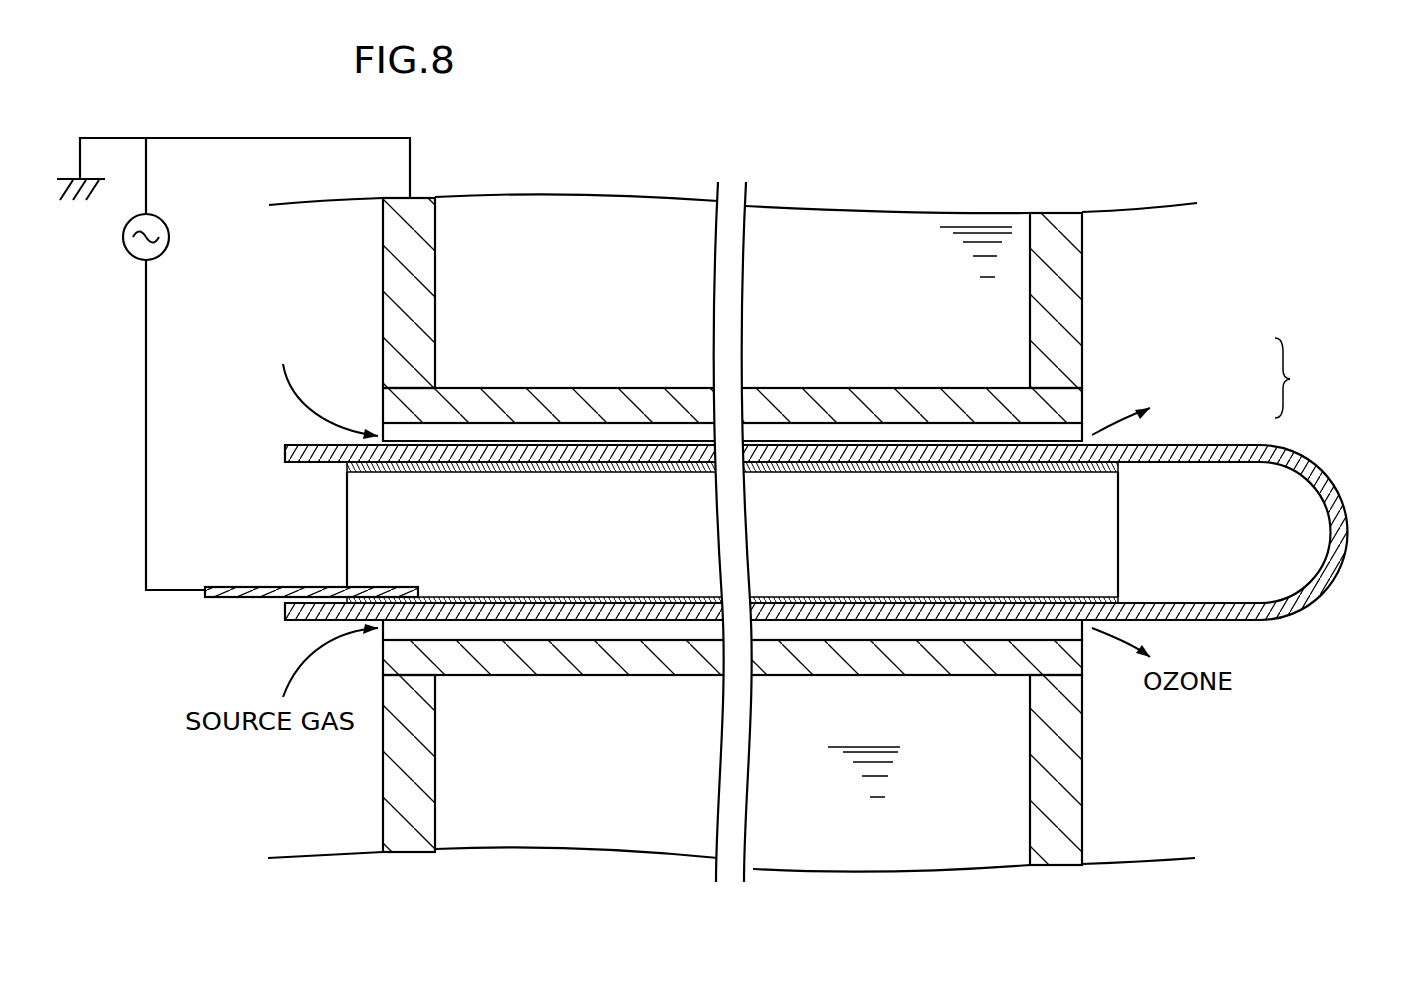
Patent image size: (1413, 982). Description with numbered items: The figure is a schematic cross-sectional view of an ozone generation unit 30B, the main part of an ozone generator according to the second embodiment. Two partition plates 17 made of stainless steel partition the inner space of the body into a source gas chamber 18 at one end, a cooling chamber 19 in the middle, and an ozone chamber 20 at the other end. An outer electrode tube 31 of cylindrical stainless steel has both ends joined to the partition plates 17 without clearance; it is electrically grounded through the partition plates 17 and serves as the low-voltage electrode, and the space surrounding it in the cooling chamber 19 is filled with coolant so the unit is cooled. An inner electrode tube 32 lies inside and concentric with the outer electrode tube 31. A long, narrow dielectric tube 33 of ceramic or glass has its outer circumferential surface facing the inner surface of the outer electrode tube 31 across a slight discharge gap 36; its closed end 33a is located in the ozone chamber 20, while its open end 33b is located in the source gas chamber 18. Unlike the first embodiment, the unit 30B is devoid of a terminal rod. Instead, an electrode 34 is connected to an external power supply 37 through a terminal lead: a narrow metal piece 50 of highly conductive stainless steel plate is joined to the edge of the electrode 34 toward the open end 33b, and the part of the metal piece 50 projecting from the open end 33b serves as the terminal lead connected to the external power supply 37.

The partition plate 17 is at (393, 817).
The source gas chamber 18 is at (340, 270).
The cooling chamber 19 is at (588, 270).
The ozone chamber 20 is at (1152, 270).
The ozone generation unit 30B is at (1313, 378).
The outer electrode tube 31 is at (1070, 403).
The inner electrode tube 32 is at (1188, 443).
The dielectric tube 33 is at (795, 455).
The closed end 33a is at (1346, 528).
The open end 33b is at (283, 607).
The electrode 34 is at (850, 490).
The discharge gap 36 is at (530, 625).
The external power supply 37 is at (122, 248).
The metal piece 50 is at (228, 587).